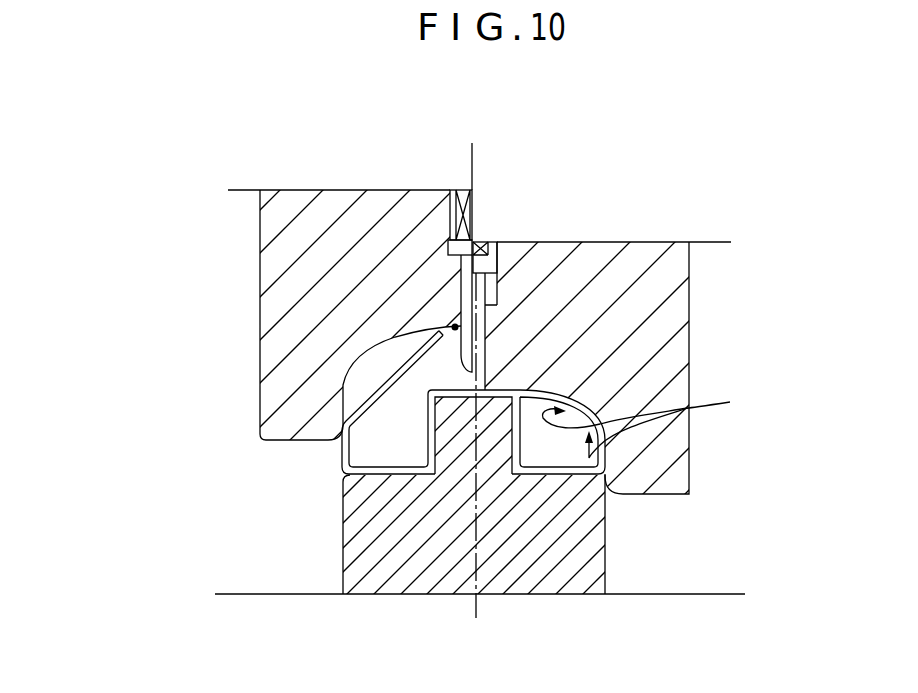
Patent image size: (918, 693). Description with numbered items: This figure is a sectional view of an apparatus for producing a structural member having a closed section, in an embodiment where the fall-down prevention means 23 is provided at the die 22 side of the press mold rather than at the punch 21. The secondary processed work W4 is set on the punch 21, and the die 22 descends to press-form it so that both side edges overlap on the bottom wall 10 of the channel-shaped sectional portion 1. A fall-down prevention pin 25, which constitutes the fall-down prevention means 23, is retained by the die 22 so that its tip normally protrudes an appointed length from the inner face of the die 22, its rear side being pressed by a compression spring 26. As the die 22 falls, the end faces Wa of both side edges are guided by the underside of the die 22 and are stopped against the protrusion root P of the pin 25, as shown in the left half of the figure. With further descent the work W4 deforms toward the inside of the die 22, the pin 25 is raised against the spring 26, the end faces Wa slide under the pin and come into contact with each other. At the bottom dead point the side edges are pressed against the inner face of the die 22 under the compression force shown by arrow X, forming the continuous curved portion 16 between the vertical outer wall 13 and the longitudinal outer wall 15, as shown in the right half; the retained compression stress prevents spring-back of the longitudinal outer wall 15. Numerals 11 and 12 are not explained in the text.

The channel-shaped sectional portion 1 is at (416, 402).
The bottom wall 10 is at (453, 388).
The top wall of workpiece 11 is at (428, 432).
The bottom flange of workpiece 12 is at (385, 480).
The vertical outer wall 13 is at (344, 447).
The longitudinal outer wall 15 is at (600, 396).
The continuous curved portion 16 is at (548, 392).
The punch 21 is at (553, 558).
The die 22 is at (660, 244).
The fall-down prevention means 23 is at (462, 180).
The fall-down prevention pin 25 is at (470, 306).
The compression spring 26 is at (465, 213).
The protrusion root P is at (455, 327).
The work W4 is at (301, 273).
The end face Wa is at (452, 327).
The arrow showing compression force X is at (650, 421).